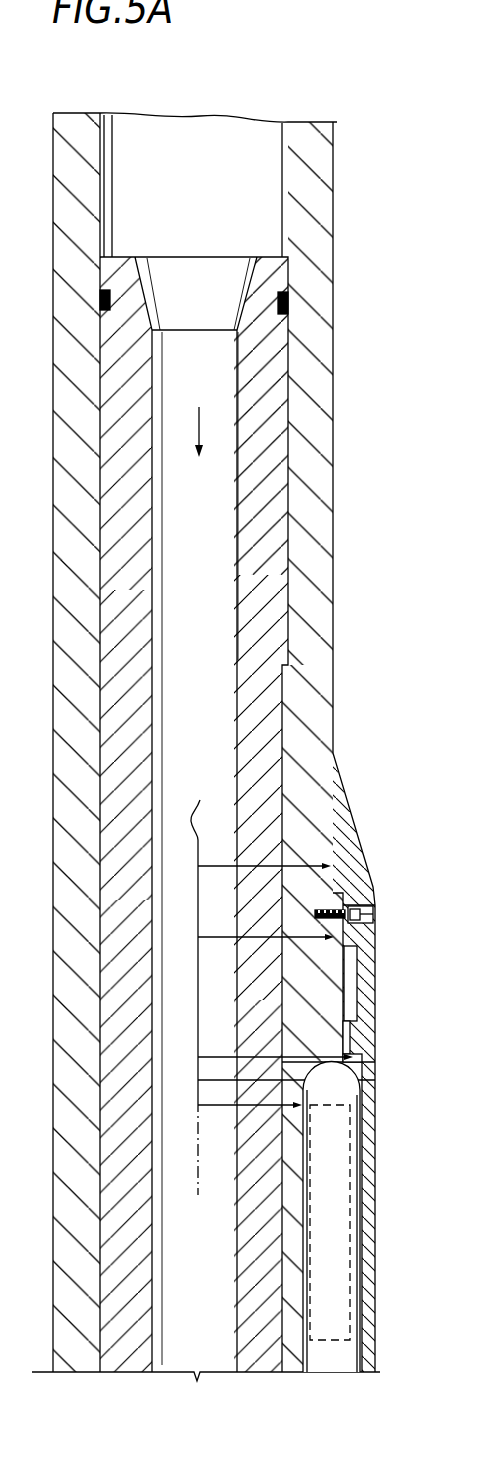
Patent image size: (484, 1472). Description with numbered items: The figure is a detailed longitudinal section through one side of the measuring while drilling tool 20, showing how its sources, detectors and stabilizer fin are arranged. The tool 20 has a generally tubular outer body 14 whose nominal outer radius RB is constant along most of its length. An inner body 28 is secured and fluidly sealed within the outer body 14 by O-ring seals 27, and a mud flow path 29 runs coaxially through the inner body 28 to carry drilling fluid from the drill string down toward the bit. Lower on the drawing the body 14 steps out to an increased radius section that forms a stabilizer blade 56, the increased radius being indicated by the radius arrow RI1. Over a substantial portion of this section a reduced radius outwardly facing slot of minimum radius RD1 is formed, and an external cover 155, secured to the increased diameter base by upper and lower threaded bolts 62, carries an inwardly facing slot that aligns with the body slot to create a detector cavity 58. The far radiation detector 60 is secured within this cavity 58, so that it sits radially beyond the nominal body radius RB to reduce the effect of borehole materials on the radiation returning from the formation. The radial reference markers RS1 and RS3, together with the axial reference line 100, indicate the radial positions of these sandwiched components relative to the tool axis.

The collar or tool 20 is at (408, 509).
The tubular outer body 14 is at (317, 483).
The O-ring seals 27 is at (303, 300).
The inner body 28 is at (276, 403).
The mud flow path 29 is at (216, 572).
The stabilizer blade 56 is at (386, 883).
The threaded bolts 62 is at (364, 916).
The external cover 155 is at (358, 990).
The cavity 58 is at (347, 1092).
The far radiation detector 60 is at (336, 1204).
The tool axis / centerline 100 is at (196, 986).
The nominal body radius RB is at (300, 866).
The radius RI1 is at (305, 952).
The radius RS3 is at (297, 1050).
The radius RS1 is at (303, 1077).
The first decreased radius RD1 is at (265, 1113).